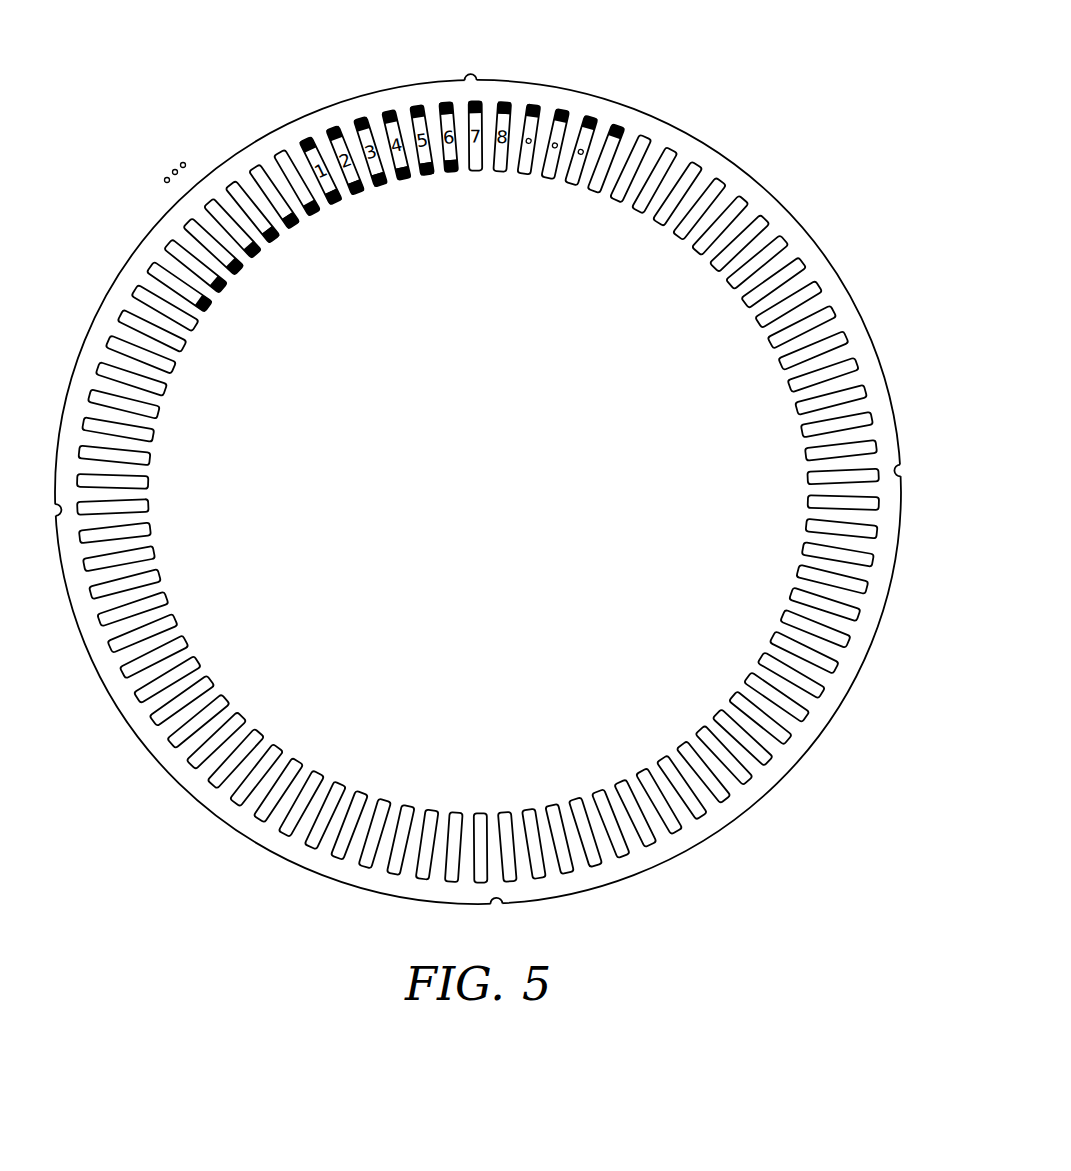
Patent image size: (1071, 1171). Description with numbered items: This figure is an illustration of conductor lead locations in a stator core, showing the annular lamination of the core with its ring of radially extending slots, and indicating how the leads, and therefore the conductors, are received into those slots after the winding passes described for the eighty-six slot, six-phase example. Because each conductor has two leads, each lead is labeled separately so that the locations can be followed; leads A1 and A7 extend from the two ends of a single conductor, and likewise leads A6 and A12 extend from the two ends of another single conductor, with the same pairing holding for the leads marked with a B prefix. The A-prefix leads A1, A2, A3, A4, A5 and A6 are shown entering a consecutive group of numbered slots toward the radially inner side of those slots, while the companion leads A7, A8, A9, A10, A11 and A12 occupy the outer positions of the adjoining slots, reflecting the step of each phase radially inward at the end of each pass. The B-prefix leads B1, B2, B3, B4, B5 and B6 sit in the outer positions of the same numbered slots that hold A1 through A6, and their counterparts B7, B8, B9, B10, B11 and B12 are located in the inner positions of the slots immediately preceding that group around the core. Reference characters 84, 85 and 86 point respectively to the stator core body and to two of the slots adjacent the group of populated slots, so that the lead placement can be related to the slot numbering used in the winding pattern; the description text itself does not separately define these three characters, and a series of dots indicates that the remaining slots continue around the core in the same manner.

The stator core 84 is at (216, 168).
The slot 85 is at (231, 184).
The slot 86 is at (255, 168).
The conductor lead A1 is at (336, 202).
The conductor lead A2 is at (358, 193).
The conductor lead A3 is at (381, 185).
The conductor lead A4 is at (404, 179).
The conductor lead A5 is at (428, 174).
The conductor lead A6 is at (452, 172).
The conductor lead A7 is at (475, 101).
The conductor lead A8 is at (505, 102).
The conductor lead A9 is at (534, 105).
The conductor lead A10 is at (563, 110).
The conductor lead A11 is at (591, 117).
The conductor lead A12 is at (619, 126).
The conductor lead B1 is at (305, 139).
The conductor lead B2 is at (332, 128).
The conductor lead B3 is at (360, 119).
The conductor lead B4 is at (388, 111).
The conductor lead B5 is at (417, 106).
The conductor lead B6 is at (446, 103).
The conductor lead B7 is at (212, 295).
The conductor lead B8 is at (236, 272).
The conductor lead B9 is at (255, 255).
The conductor lead B10 is at (274, 240).
The conductor lead B11 is at (293, 226).
The conductor lead B12 is at (314, 214).